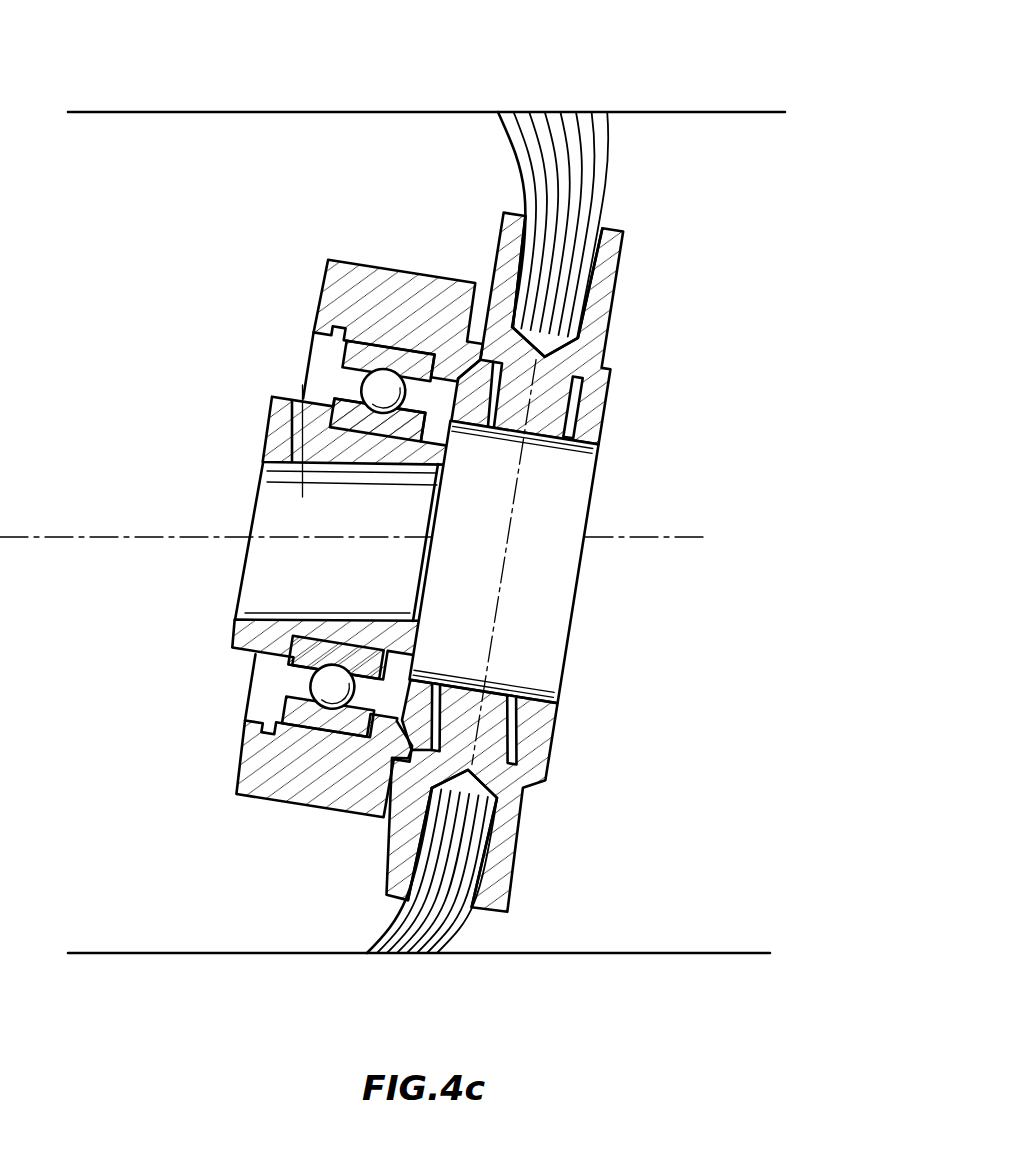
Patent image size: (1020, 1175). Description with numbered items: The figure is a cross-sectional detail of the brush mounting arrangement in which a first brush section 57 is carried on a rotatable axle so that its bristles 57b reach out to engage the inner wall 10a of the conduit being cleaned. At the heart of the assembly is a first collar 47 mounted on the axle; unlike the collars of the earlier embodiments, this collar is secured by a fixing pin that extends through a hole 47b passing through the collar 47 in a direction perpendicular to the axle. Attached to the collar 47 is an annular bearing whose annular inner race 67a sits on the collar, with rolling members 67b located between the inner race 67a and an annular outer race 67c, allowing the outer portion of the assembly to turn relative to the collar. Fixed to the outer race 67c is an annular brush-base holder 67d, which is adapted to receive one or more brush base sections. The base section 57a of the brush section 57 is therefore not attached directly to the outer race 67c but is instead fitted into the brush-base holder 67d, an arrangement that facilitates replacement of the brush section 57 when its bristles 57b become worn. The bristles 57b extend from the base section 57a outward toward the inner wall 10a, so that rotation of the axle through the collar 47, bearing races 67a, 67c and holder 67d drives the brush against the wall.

The inner wall 10a is at (767, 112).
The first brush section 57 is at (666, 402).
The base section 57a is at (508, 258).
The bristles 57b is at (552, 128).
The first collar 47 is at (276, 440).
The hole 47b is at (302, 427).
The annular inner race 67a is at (300, 663).
The rolling members 67b is at (330, 684).
The annular outer race 67c is at (348, 357).
The annular brush-base holder 67d is at (343, 272).